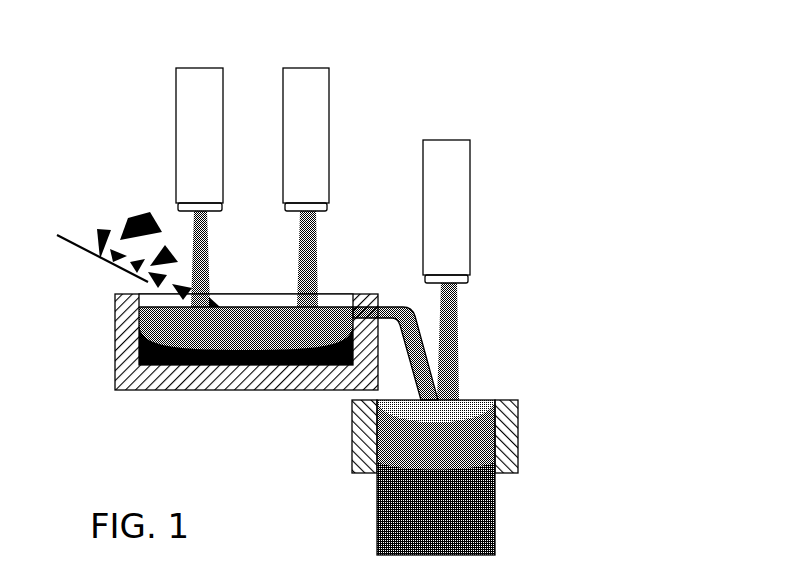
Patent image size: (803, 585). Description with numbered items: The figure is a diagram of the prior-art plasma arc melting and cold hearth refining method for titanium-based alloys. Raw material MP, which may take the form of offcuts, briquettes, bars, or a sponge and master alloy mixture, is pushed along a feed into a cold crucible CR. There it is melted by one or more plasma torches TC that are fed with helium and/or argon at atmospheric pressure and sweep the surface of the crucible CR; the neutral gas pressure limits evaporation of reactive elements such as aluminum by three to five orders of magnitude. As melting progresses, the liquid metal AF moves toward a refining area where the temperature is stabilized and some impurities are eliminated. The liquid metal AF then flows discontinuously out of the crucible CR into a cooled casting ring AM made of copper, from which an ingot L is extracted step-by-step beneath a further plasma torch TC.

The plasma torch TC is at (177, 137).
The raw material MP is at (98, 232).
The cold crucible CR is at (247, 392).
The liquid metal AF is at (396, 304).
The casting ring AM is at (352, 438).
The ingot L is at (373, 480).